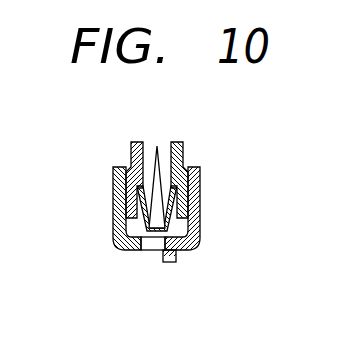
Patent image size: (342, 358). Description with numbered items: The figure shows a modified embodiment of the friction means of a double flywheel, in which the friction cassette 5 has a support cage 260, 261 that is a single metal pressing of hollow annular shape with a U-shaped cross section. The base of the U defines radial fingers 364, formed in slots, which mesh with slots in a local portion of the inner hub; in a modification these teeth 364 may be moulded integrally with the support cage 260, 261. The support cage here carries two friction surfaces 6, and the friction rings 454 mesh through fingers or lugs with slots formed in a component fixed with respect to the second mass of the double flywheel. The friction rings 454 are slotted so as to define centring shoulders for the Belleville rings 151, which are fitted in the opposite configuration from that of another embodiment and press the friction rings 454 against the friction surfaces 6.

The connector assembly 5 is at (158, 243).
The friction surface 6 is at (128, 163).
The Belleville ring 151 is at (157, 144).
The support cage 260 is at (113, 205).
The support cage 261 is at (200, 222).
The radial finger 364 is at (192, 284).
The friction ring 454 is at (132, 142).